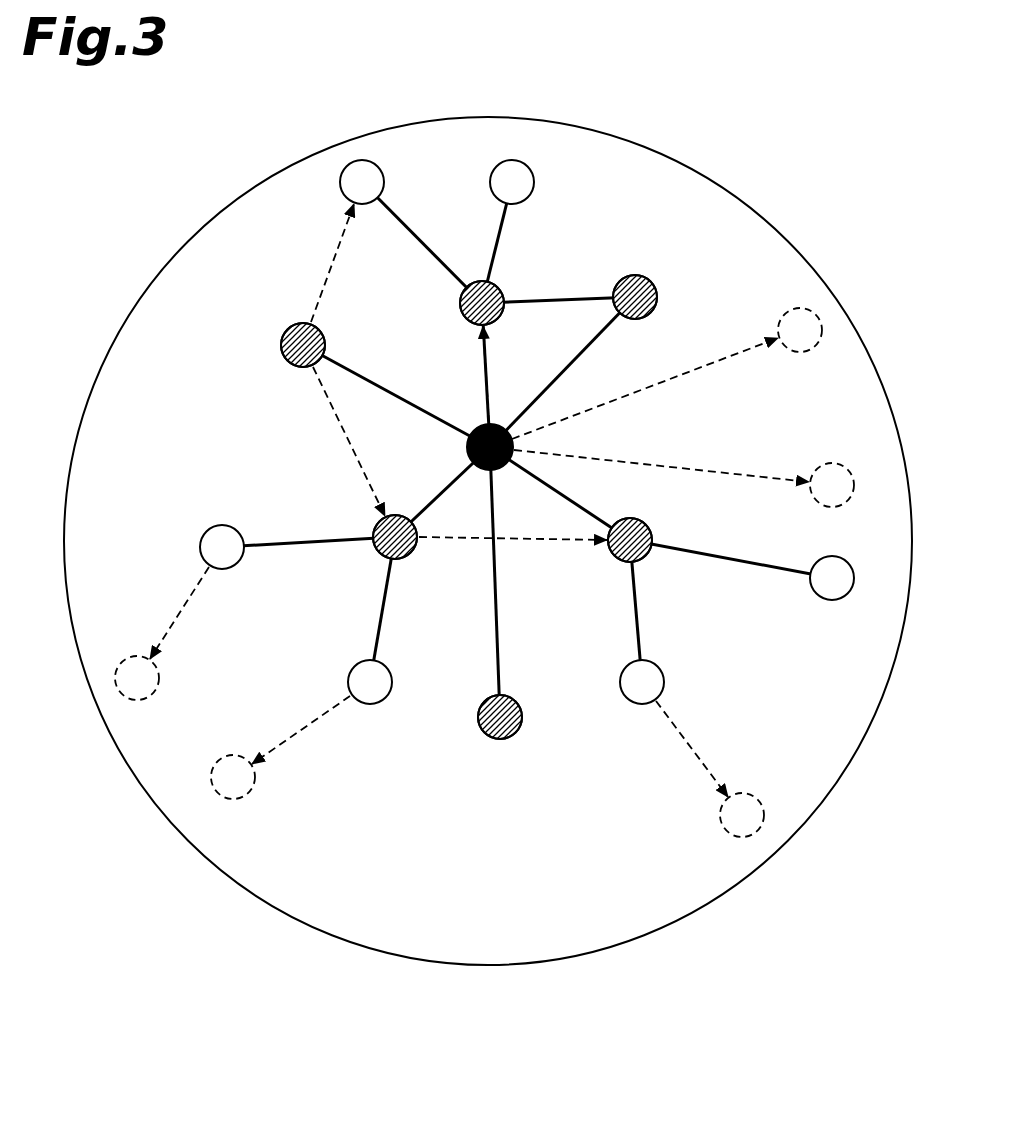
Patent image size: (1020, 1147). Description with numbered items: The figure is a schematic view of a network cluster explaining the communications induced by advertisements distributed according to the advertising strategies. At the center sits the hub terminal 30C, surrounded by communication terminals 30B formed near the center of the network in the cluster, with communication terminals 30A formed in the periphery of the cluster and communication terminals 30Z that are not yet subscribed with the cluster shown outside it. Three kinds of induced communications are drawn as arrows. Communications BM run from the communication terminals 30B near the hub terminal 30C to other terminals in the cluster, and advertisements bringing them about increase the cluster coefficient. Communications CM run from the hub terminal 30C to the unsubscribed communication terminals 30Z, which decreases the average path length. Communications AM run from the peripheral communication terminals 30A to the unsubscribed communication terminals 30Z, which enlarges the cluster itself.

The communication terminals formed in the periphery of the cluster 30A is at (384, 176).
The communication terminals formed near a center of a network in a cluster 30B is at (281, 340).
The hub terminal 30C is at (495, 422).
The communication terminals not subscribed with the cluster 30Z is at (818, 347).
The communications BM is at (330, 277).
The communications CM is at (710, 363).
The communications AM is at (190, 598).